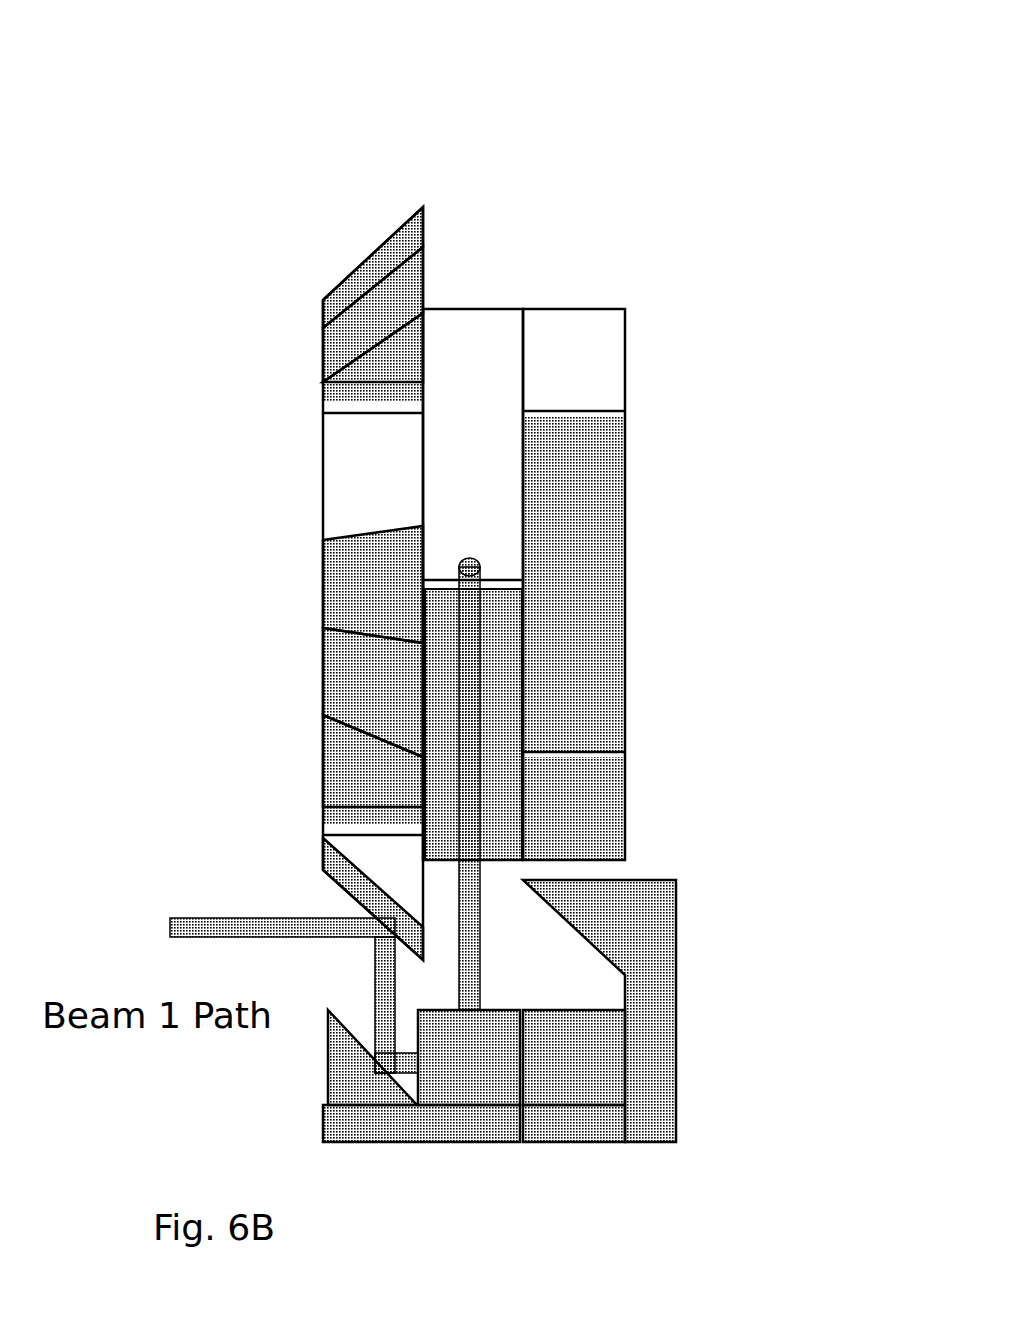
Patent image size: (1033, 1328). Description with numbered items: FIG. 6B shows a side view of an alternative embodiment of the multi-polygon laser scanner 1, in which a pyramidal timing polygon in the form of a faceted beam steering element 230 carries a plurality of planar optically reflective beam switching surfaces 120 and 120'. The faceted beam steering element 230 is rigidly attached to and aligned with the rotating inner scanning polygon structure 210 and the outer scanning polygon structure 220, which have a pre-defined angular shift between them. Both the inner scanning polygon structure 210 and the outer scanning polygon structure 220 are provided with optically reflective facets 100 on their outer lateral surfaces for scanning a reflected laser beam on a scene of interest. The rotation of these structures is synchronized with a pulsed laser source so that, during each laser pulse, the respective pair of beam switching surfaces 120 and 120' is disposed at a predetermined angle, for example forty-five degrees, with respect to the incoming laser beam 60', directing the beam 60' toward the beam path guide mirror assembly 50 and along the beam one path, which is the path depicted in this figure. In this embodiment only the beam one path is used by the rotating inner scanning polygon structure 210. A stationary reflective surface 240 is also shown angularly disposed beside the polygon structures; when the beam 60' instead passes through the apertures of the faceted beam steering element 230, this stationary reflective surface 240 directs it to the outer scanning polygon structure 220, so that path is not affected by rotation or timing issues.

The multi-polygon laser scanner 1 is at (645, 158).
The beam path guide mirror assembly 50 is at (562, 1067).
The incoming laser beam 60' is at (263, 935).
The optically reflective facets 100 is at (487, 390).
The optically reflective beam switching surface 120 is at (305, 187).
The optically reflective beam switching surface 120' is at (273, 303).
The inner scanning polygon structure 210 is at (477, 302).
The outer scanning polygon structure 220 is at (628, 387).
The faceted beam steering element 230 is at (320, 472).
The stationary reflective surface 240 is at (590, 938).